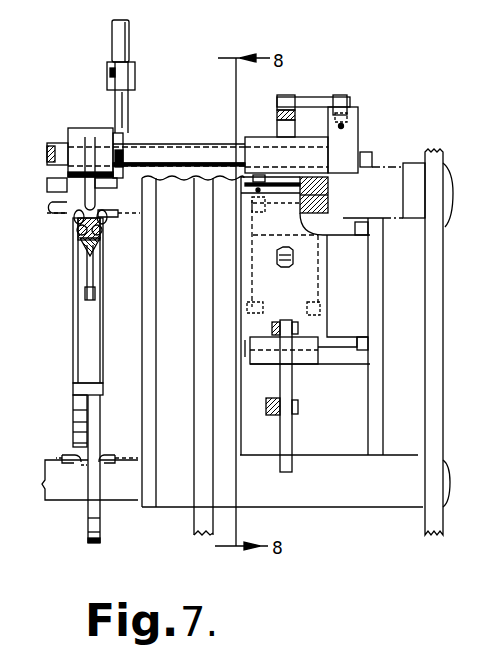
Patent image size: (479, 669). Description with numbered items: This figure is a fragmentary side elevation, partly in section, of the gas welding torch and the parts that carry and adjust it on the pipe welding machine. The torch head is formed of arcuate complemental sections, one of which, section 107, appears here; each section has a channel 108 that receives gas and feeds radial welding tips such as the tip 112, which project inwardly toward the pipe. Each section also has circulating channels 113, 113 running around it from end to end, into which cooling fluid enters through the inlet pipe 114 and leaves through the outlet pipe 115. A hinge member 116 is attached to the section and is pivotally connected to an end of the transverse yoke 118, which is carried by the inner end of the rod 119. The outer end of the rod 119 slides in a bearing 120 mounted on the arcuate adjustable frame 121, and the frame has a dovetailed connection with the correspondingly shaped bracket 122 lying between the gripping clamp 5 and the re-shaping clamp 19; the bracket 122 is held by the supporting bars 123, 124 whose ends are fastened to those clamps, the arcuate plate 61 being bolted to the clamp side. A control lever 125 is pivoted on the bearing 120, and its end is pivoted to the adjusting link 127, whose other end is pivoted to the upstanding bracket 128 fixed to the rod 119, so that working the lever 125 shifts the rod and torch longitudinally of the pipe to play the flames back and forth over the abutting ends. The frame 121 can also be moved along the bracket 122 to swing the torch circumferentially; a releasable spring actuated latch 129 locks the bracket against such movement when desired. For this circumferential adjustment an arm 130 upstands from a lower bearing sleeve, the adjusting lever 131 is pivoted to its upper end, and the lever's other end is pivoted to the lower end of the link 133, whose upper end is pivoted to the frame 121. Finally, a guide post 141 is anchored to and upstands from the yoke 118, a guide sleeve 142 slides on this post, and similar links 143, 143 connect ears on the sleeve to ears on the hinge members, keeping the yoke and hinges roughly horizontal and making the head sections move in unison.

The pipe gripping clamp 5 is at (437, 170).
The pipe re-shaping clamp 19 is at (236, 421).
The arcuate plate 61 is at (375, 410).
The arcuate complemental section 107 is at (83, 321).
The channel 108 is at (79, 241).
The radial welding tip 112 is at (83, 261).
The circulating channel 113 is at (77, 227).
The inlet pipe 114 is at (47, 206).
The outlet pipe 115 is at (68, 453).
The hinge member 116 is at (52, 187).
The transverse yoke 118 is at (66, 138).
The rod 119 is at (161, 143).
The bearing 120 is at (255, 135).
The adjustable frame 121 is at (308, 283).
The bracket 122 is at (323, 345).
The supporting bar 123 is at (351, 240).
The supporting bar 124 is at (343, 366).
The control lever 125 is at (292, 115).
The adjusting link 127 is at (305, 98).
The upstanding bracket 128 is at (356, 130).
The latch 129 is at (295, 262).
The arm 130 is at (293, 435).
The adjusting lever 131 is at (270, 397).
The link 133 is at (283, 377).
The guide post 141 is at (131, 46).
The guide sleeve 142 is at (136, 84).
The link 143 is at (122, 105).